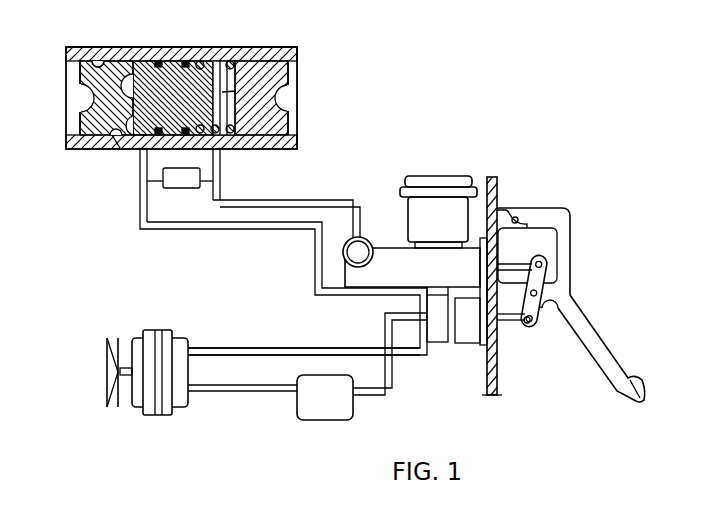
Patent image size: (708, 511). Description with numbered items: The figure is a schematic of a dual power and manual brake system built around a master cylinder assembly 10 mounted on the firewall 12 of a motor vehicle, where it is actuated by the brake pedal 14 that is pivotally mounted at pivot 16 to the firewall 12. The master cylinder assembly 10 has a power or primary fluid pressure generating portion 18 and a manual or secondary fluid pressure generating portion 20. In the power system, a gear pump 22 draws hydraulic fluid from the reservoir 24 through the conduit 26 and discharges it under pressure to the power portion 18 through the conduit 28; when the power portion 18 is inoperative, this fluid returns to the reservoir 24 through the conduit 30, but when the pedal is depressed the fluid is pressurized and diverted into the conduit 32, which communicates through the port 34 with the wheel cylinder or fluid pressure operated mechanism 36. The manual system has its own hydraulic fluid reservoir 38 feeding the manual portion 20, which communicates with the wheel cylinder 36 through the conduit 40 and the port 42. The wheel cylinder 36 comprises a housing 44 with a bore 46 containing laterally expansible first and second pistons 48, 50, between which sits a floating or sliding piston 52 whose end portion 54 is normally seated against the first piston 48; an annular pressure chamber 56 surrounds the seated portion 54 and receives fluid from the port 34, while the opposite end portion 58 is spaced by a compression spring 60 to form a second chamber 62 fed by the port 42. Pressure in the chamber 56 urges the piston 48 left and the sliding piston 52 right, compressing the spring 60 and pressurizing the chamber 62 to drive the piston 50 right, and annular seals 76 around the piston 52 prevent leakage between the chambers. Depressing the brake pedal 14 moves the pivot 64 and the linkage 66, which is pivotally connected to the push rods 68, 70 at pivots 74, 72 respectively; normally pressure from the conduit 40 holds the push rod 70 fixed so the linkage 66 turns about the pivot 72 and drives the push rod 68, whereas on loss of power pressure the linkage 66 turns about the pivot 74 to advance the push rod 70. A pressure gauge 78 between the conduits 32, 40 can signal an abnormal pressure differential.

The master cylinder assembly 10 is at (364, 304).
The firewall 12 is at (500, 186).
The brake pedal 14 is at (606, 352).
The pivot 16 is at (518, 216).
The power or primary fluid pressure generating portion 18 is at (438, 345).
The manual or secondary fluid pressure generating portion 20 is at (392, 275).
The gear pump 22 is at (156, 412).
The reservoir 24 is at (350, 420).
The conduit 26 is at (236, 392).
The conduit 28 is at (236, 348).
The conduit 30 is at (392, 378).
The conduit 32 is at (253, 230).
The port 34 is at (148, 138).
The wheel cylinder or fluid pressure operated mechanism 36 is at (258, 46).
The hydraulic fluid reservoir 38 is at (435, 176).
The conduit 40 is at (293, 200).
The port 42 is at (218, 150).
The housing 44 is at (162, 54).
The bore 46 is at (96, 64).
The first piston 48 is at (85, 122).
The second piston 50 is at (277, 122).
The floating or sliding piston 52 is at (193, 63).
The end portion 54 is at (124, 78).
The annular pressure chamber 56 is at (120, 140).
The end portion 58 is at (222, 92).
The compression spring 60 is at (236, 60).
The second chamber 62 is at (212, 150).
The pivot 64 is at (543, 308).
The linkage 66 is at (542, 278).
The push rod 68 is at (507, 323).
The push rod 70 is at (508, 268).
The pivot 72 is at (548, 262).
The pivot 74 is at (530, 327).
The annular seals 76 is at (140, 180).
The pressure gauge 78 is at (177, 190).